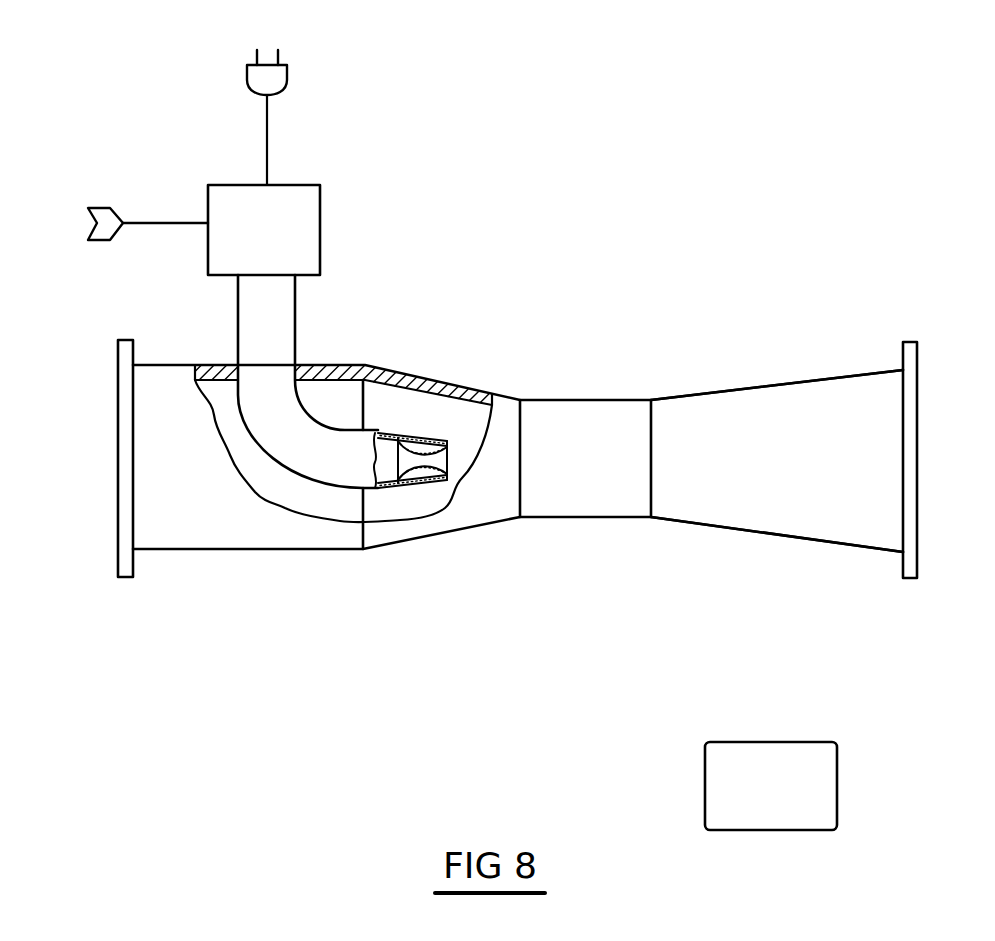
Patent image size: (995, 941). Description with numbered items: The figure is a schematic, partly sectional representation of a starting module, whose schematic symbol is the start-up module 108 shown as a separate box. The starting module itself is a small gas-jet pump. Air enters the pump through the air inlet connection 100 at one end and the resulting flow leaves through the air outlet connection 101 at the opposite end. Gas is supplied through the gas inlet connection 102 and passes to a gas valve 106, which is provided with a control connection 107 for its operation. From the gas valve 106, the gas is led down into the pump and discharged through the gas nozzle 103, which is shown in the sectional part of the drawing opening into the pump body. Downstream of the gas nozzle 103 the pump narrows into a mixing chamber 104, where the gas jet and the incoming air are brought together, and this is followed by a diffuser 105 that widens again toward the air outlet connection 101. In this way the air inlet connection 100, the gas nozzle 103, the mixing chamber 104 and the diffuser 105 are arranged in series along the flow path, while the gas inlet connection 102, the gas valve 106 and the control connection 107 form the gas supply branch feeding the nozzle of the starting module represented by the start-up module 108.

The air inlet connection 100 is at (125, 490).
The air outlet connection 101 is at (907, 580).
The gas inlet connection 102 is at (105, 205).
The gas nozzle 103 is at (342, 505).
The mixing chamber 104 is at (610, 503).
The diffuser 105 is at (805, 527).
The gas valve 106 is at (320, 260).
The control connection 107 is at (287, 77).
The start-up module 108 is at (828, 803).